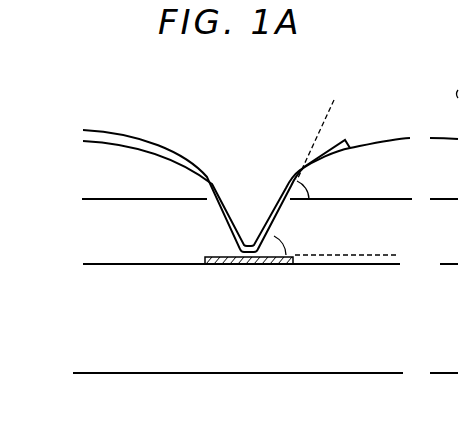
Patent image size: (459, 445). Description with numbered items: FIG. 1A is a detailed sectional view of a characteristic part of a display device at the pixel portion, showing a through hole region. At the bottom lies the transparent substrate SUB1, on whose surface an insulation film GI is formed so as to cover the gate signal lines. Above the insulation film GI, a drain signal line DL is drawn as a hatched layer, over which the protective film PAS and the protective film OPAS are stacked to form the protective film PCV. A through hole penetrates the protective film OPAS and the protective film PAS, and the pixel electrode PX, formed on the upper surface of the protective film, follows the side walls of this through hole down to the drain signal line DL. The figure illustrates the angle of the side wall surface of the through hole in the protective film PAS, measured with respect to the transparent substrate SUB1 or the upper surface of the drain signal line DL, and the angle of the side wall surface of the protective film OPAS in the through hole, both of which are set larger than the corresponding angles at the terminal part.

The pixel electrode PX is at (205, 173).
The protective film OPAS is at (93, 177).
The protective film PAS is at (101, 237).
The insulation film GI is at (270, 301).
The transparent substrate SUB1 is at (265, 389).
The drain signal line DL is at (255, 268).